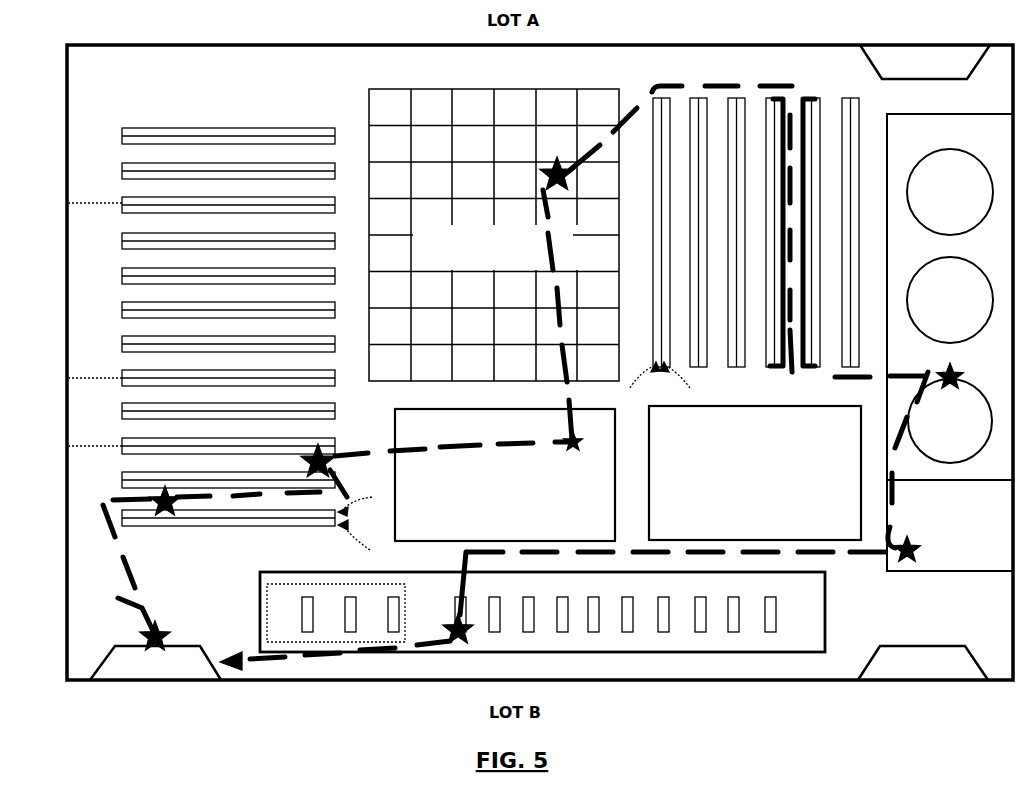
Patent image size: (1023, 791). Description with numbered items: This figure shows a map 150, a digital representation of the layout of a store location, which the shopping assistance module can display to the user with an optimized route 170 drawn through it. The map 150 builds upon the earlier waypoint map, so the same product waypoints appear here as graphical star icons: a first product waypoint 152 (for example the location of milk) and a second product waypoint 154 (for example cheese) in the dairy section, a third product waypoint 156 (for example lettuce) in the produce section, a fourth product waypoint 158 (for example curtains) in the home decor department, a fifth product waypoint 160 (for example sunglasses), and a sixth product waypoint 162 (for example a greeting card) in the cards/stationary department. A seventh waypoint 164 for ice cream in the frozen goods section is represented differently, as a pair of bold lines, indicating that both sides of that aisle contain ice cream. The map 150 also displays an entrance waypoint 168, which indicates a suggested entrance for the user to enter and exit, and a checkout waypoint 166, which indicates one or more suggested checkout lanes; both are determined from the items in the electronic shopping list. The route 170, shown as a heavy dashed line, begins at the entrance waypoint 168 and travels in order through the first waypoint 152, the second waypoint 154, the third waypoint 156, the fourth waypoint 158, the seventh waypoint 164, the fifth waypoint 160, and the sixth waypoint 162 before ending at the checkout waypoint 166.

The map 150 is at (300, 29).
The first product waypoint 152 is at (165, 512).
The second product waypoint 154 is at (338, 456).
The third product waypoint 156 is at (566, 447).
The fourth product waypoint 158 is at (564, 170).
The fifth product waypoint 160 is at (963, 373).
The sixth product waypoint 162 is at (914, 558).
The seventh waypoint 164 is at (792, 372).
The checkout waypoint 166 is at (465, 645).
The entrance waypoint 168 is at (163, 626).
The route 170 is at (118, 598).